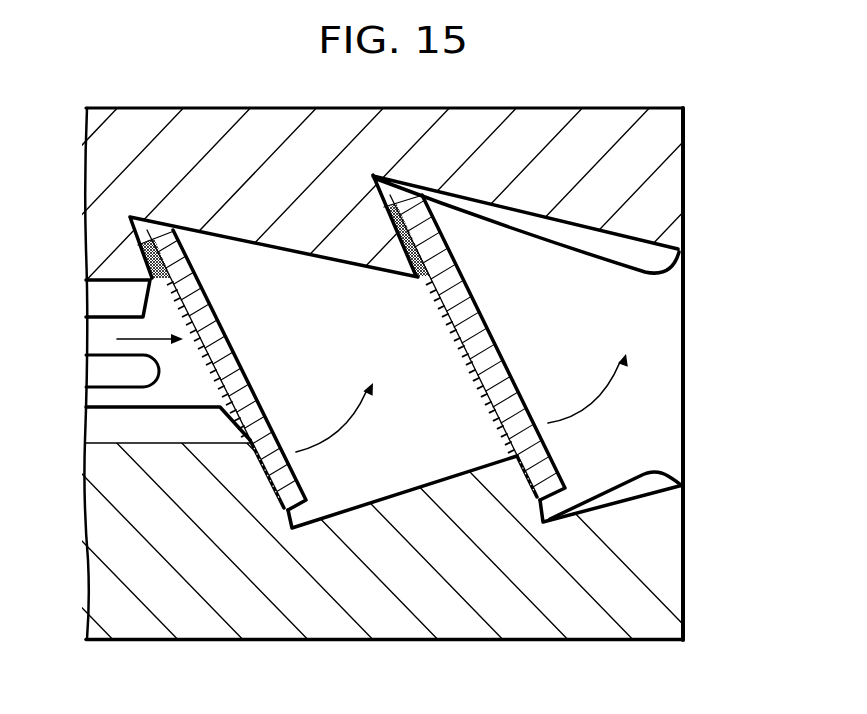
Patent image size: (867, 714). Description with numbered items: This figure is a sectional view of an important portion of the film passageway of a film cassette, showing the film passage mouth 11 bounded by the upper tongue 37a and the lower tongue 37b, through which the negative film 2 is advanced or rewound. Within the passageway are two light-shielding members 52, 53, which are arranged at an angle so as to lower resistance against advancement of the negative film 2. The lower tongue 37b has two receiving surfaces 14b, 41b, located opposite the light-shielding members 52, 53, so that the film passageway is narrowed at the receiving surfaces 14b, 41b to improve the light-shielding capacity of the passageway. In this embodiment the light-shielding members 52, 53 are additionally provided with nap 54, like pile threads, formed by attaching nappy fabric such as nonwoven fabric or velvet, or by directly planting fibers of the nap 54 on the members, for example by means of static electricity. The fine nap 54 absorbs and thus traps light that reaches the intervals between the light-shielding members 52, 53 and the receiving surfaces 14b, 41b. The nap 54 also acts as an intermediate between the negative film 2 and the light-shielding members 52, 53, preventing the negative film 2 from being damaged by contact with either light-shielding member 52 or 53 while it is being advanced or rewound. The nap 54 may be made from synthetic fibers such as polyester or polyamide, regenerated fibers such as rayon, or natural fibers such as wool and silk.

The negative film 2 is at (117, 372).
The film passage mouth 11 is at (683, 391).
The receiving surface 14b is at (278, 490).
The tongue 37a is at (668, 178).
The lower tongue 37b is at (668, 601).
The receiving surface 41b is at (536, 489).
The light-shielding member 52 is at (232, 350).
The light-shielding member 53 is at (500, 355).
The nap 54 is at (223, 387).